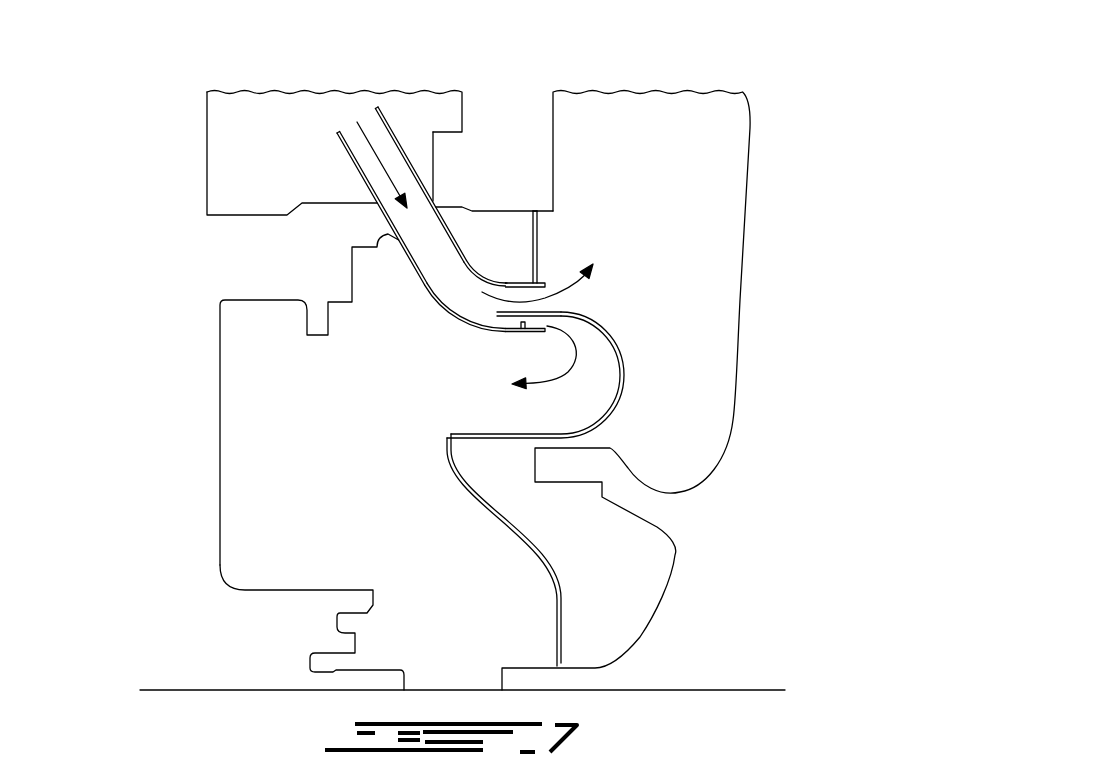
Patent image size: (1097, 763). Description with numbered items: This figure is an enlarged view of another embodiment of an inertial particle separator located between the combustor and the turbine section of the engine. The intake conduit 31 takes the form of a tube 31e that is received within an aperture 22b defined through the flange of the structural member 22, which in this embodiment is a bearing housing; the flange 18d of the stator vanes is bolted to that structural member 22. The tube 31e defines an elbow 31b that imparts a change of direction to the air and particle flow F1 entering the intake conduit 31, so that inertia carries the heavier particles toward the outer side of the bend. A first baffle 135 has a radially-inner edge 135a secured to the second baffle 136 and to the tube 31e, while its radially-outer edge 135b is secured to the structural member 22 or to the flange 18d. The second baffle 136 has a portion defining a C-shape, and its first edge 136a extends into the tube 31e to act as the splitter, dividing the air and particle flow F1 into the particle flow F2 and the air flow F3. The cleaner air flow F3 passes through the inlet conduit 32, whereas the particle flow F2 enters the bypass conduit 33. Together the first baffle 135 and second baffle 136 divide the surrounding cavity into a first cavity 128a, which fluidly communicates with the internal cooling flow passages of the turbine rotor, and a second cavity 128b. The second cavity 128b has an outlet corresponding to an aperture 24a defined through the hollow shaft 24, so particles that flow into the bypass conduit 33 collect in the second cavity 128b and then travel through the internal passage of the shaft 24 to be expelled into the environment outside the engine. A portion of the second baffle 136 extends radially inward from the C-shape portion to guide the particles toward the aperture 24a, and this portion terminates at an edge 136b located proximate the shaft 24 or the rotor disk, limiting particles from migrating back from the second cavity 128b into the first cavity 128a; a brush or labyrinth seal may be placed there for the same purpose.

The flange 18d is at (504, 110).
The structural member 22 is at (245, 253).
The aperture 22b is at (435, 203).
The shaft 24 is at (708, 690).
The aperture 24a is at (464, 670).
The intake conduit 31 is at (361, 168).
The elbow 31b is at (478, 329).
The tube 31e is at (424, 285).
The inlet conduit 32 is at (515, 278).
The bypass conduit 33 is at (521, 348).
The first cavity 128a is at (696, 156).
The second cavity 128b is at (348, 509).
The first baffle 135 is at (538, 235).
The radially-inner edge 135a is at (544, 272).
The radially-outer edge 135b is at (550, 208).
The second baffle 136 is at (622, 350).
The first edge 136a is at (497, 312).
The edge 136b is at (572, 663).
The air and particle flow F1 is at (368, 140).
The particle flow F2 is at (588, 362).
The air flow F3 is at (545, 300).